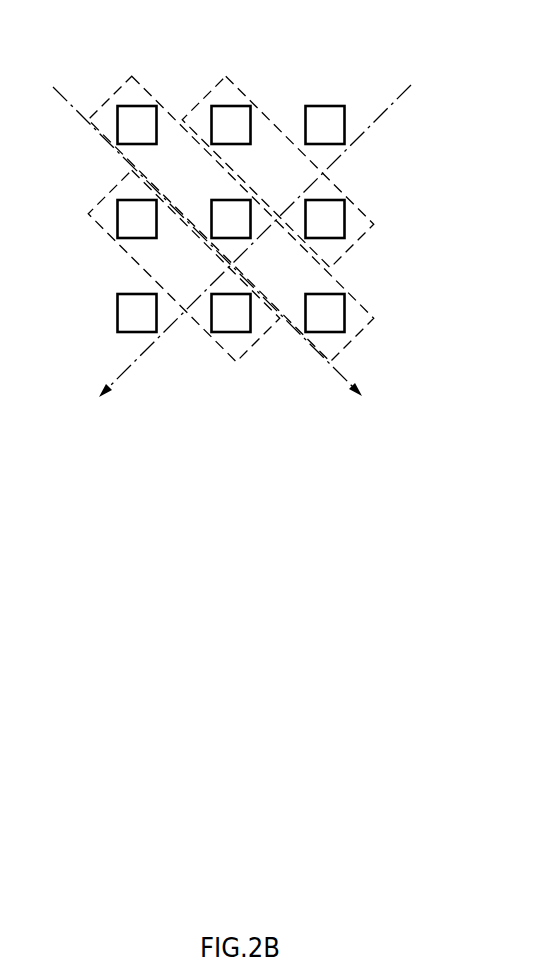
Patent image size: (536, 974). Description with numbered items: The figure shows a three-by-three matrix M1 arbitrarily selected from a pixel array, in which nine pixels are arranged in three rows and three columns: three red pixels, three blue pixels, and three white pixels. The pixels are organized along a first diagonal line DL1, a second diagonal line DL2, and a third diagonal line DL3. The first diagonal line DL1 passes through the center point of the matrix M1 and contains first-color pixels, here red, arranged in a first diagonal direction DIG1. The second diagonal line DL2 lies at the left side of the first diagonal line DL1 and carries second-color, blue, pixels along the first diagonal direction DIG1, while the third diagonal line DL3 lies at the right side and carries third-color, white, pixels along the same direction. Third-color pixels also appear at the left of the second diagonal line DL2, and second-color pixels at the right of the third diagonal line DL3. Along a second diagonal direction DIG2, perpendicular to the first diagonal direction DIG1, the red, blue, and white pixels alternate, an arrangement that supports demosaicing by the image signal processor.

The (3×3) matrix M1 is at (373, 39).
The first diagonal line DL1 is at (357, 297).
The second diagonal line DL2 is at (263, 337).
The third diagonal line DL3 is at (357, 205).
The first diagonal direction DIG1 is at (222, 259).
The second diagonal direction DIG2 is at (239, 257).